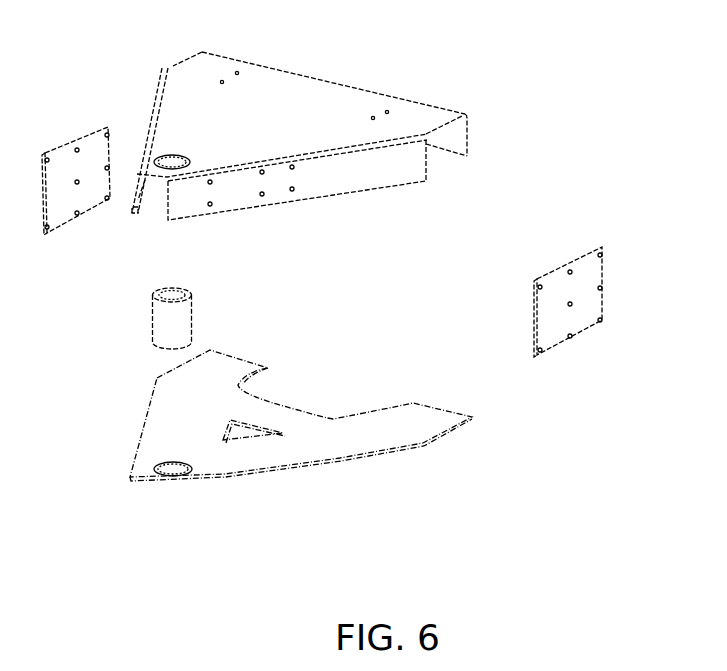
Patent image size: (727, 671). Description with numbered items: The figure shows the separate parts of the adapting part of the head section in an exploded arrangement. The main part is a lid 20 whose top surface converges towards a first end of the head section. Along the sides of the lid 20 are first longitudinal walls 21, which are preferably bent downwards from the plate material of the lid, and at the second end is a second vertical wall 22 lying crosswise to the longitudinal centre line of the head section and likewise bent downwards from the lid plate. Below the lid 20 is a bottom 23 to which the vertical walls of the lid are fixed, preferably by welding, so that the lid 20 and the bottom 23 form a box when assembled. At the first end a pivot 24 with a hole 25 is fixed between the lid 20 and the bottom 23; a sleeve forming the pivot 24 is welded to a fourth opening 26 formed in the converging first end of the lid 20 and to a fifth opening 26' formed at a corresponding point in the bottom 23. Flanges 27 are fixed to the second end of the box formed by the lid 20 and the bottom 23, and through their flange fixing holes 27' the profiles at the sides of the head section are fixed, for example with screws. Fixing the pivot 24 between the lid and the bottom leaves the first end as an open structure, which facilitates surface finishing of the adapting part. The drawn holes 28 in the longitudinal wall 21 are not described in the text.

The lid 20 is at (347, 98).
The first longitudinal walls 21 is at (405, 165).
The second vertical wall 22 is at (457, 143).
The bottom 23 is at (340, 440).
The pivot 24 is at (160, 312).
The hole 25 is at (173, 293).
The fourth opening 26 is at (149, 128).
The fifth opening 26' is at (206, 498).
The flanges 27 is at (360, 260).
The flange fixing holes 27' is at (642, 317).
The panel holes 28 is at (293, 190).